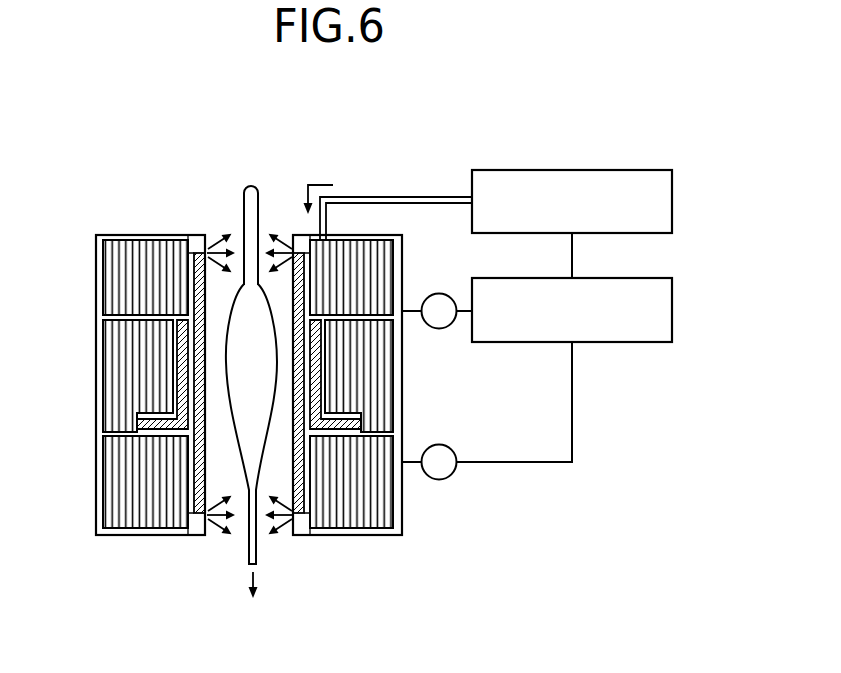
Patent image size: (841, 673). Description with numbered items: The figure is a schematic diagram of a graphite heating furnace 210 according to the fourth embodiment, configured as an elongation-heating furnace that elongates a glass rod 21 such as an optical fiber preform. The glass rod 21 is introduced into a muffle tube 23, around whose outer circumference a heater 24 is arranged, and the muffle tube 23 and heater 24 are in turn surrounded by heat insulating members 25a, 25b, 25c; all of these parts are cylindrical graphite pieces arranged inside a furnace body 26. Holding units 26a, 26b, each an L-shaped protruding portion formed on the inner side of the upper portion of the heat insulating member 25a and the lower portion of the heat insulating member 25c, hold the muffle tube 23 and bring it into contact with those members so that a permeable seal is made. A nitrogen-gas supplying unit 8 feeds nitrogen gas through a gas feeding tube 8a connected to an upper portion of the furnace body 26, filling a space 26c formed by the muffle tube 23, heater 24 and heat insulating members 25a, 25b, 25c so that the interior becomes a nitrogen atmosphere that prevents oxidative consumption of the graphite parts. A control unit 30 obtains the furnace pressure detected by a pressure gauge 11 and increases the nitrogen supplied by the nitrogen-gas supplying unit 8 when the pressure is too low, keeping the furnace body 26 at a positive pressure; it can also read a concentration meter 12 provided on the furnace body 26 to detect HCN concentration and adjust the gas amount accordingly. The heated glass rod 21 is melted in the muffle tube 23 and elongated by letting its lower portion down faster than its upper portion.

The graphite heating furnace 210 is at (321, 138).
The nitrogen-gas supplying unit 8 is at (672, 200).
The gas feeding tube 8a is at (397, 197).
The pressure gauge 11 is at (439, 294).
The concentration meter 12 is at (441, 445).
The glass rod 21 is at (263, 571).
The muffle tube 23 is at (303, 492).
The heater 24 is at (138, 423).
The heat insulating member 25a is at (97, 270).
The heat insulating member 25b is at (97, 347).
The heat insulating member 25c is at (97, 486).
The furnace body 26 is at (403, 497).
The holding unit 26a is at (204, 250).
The holding unit 26b is at (200, 518).
The space 26c is at (403, 528).
The control unit 30 is at (672, 311).